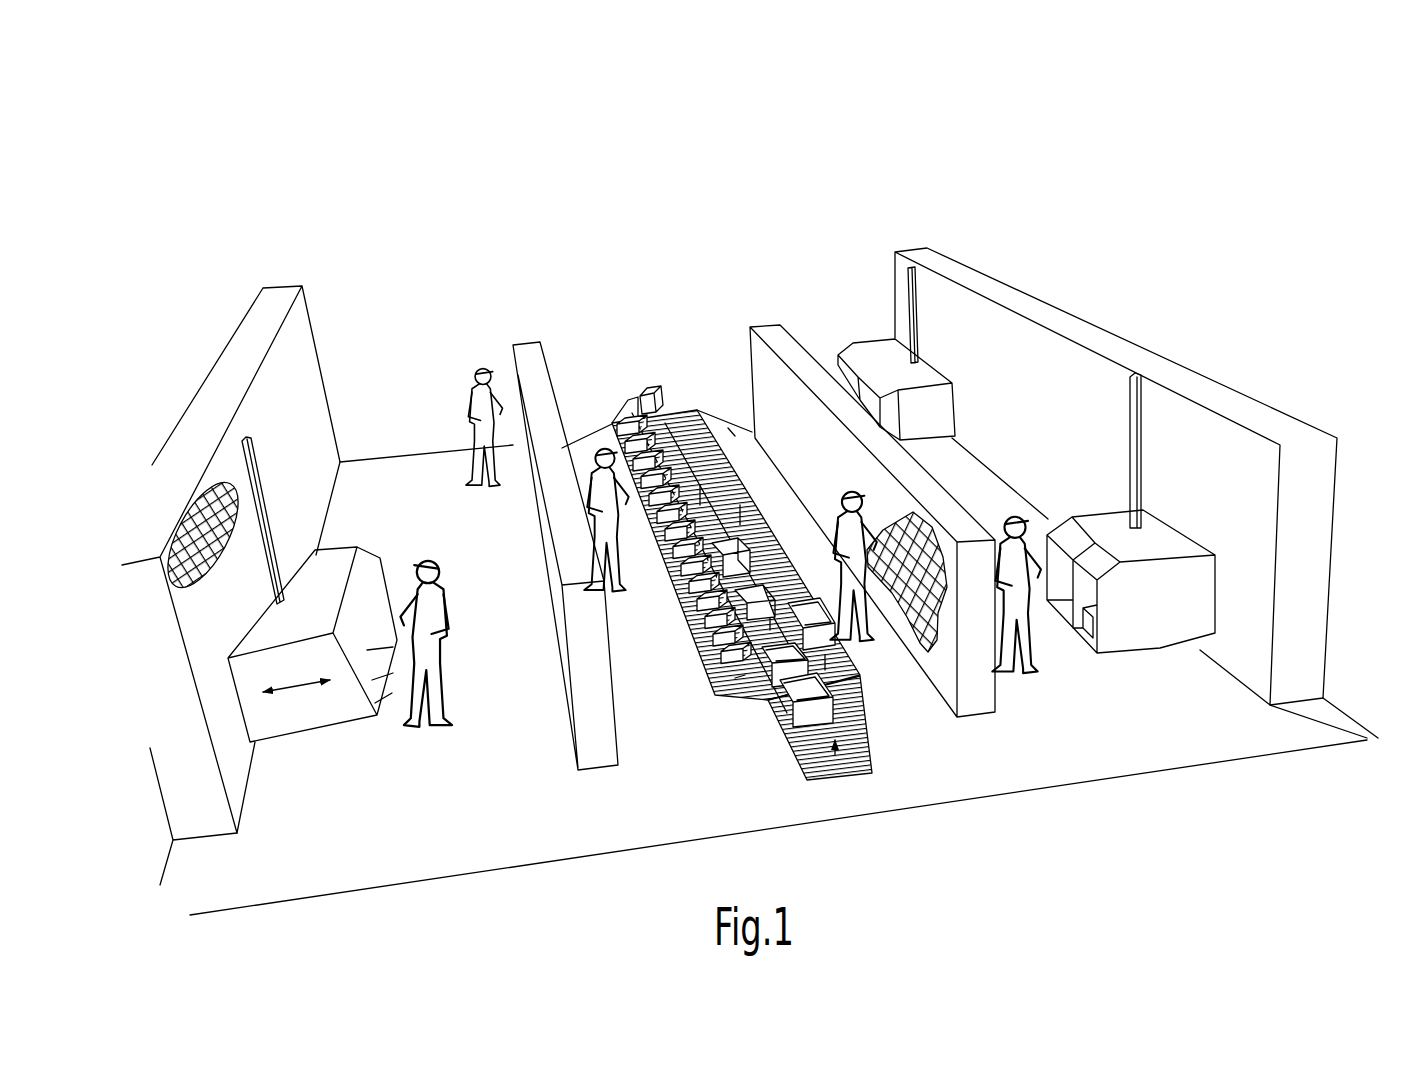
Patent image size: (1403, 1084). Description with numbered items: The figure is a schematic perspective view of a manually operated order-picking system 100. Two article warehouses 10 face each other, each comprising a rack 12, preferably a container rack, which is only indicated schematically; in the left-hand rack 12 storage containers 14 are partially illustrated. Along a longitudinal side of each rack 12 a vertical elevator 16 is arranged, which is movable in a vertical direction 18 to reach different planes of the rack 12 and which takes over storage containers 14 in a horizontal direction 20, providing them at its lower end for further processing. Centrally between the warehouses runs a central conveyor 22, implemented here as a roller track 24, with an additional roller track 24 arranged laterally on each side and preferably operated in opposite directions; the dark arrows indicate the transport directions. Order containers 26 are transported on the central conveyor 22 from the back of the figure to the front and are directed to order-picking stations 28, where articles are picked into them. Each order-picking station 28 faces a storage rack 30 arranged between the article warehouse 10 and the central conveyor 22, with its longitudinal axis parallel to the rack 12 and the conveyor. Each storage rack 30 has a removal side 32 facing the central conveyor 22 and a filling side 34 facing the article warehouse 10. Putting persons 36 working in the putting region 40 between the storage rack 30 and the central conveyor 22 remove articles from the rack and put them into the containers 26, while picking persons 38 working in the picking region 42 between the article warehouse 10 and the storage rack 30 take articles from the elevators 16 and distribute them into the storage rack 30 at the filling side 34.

The order-picking system 100 is at (677, 240).
The article warehouse 10 is at (317, 318).
The rack 12 is at (226, 343).
The storage container 14 is at (194, 568).
The vertical elevator 16 is at (320, 575).
The vertical direction 18 is at (277, 513).
The horizontal direction 20 is at (300, 689).
The central conveyor 22 is at (850, 795).
The roller track 24 is at (627, 397).
The order container 26 is at (661, 388).
The order-picking station 28 is at (740, 705).
The storage rack 30 is at (598, 772).
The removal side 32 is at (768, 376).
The filling side 34 is at (553, 606).
The putting person 36 is at (623, 543).
The picking person 38 is at (480, 453).
The putting region 40 is at (585, 385).
The picking region 42 is at (418, 380).